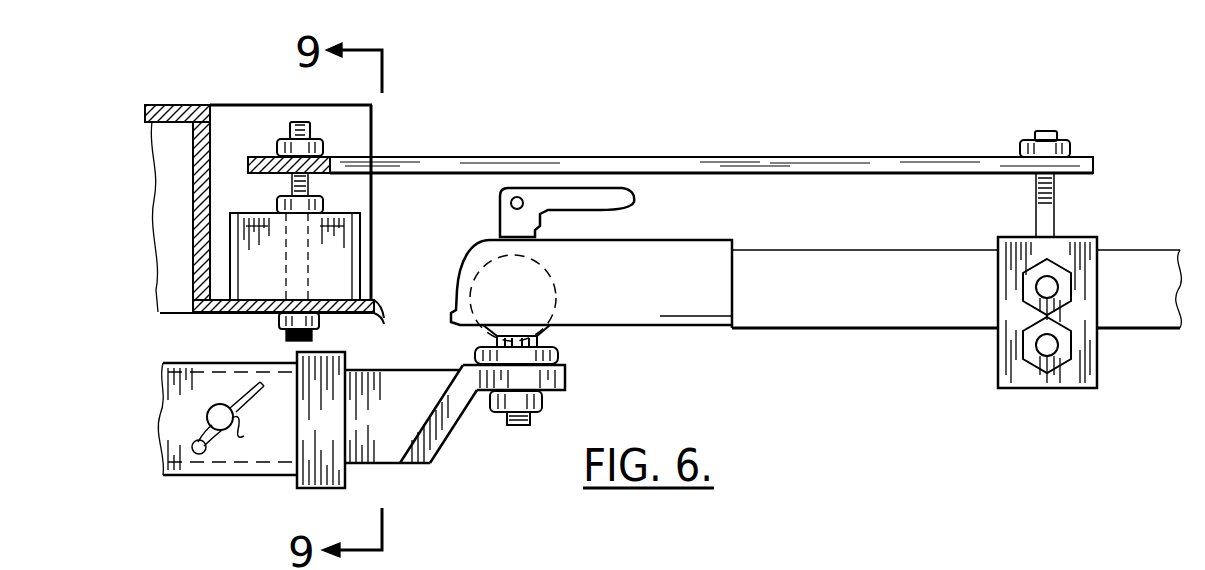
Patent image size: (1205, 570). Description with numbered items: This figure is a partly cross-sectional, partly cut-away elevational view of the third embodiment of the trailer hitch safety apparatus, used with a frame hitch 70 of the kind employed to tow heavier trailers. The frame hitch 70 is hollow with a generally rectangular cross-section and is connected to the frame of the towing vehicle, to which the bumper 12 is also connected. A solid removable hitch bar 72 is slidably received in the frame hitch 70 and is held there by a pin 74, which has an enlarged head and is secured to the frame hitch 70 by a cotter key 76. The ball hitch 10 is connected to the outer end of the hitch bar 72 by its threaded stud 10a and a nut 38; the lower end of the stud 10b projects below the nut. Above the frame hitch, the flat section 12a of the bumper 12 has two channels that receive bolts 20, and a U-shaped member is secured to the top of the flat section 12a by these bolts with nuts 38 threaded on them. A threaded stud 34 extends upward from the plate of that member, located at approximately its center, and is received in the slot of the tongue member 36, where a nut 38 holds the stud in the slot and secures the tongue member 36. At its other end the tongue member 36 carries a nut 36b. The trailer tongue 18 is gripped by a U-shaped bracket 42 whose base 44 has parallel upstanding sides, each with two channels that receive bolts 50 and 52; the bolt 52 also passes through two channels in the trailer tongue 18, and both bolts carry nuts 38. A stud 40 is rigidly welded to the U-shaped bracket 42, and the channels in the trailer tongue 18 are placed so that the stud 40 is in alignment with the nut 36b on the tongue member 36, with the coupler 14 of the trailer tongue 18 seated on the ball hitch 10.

The ball hitch 10 is at (555, 283).
The threaded stud 10a is at (542, 396).
The ball shank end 10b is at (510, 425).
The bumper 12 is at (179, 320).
The flat section 12a is at (382, 322).
The coupler 14 is at (472, 265).
The trailer tongue 18 is at (808, 263).
The bolt 20 is at (280, 205).
The threaded stud 34 is at (318, 188).
The tongue member 36 is at (724, 148).
The nut 36b is at (1063, 150).
The nut 38 is at (312, 156).
The stud 40 is at (1040, 210).
The U-shaped bracket 42 is at (1115, 236).
The base 44 is at (1064, 246).
The bolt 50 is at (1040, 345).
The bolt 52 is at (1040, 289).
The frame hitch 70 is at (238, 484).
The hitch bar 72 is at (400, 466).
The pin 74 is at (234, 399).
The cotter key 76 is at (264, 386).